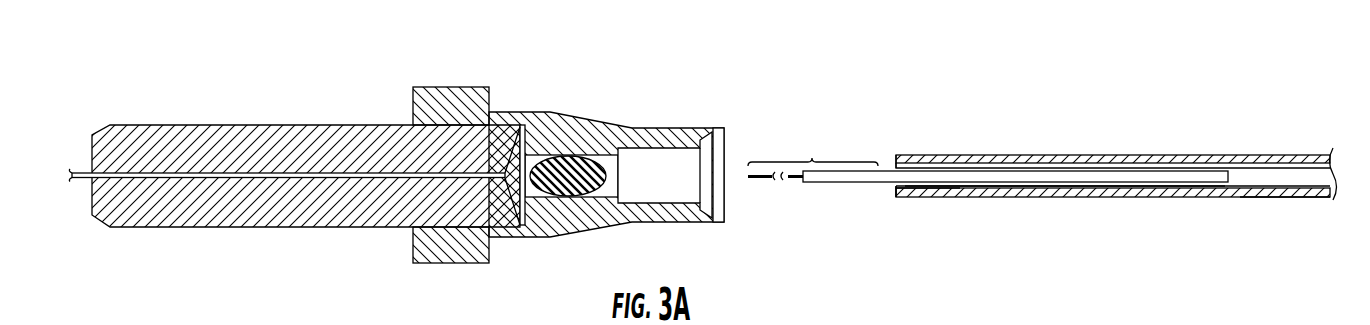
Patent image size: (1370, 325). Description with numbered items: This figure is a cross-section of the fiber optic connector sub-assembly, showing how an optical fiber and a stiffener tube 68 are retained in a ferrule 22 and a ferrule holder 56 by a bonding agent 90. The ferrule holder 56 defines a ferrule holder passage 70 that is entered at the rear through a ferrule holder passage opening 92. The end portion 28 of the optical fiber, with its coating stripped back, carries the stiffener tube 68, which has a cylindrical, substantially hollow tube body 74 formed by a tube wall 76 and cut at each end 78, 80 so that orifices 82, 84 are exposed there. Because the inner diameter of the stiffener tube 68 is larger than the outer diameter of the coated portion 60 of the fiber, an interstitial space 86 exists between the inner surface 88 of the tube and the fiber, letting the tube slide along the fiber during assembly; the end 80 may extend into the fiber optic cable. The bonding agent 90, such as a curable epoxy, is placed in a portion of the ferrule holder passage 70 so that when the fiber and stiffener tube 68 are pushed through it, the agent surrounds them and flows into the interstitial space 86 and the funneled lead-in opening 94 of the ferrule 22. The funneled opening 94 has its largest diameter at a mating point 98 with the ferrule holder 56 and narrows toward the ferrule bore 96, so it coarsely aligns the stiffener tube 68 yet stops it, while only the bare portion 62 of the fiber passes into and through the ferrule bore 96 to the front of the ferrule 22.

The ferrule 22 is at (203, 213).
The end portion 28 is at (813, 146).
The ferrule holder 56 is at (555, 113).
The coated portion 60 is at (827, 184).
The bare portion 62 is at (757, 180).
The stiffener tube 68 is at (990, 154).
The ferrule holder passage 70 is at (603, 158).
The tube body 74 is at (992, 198).
The tube wall 76 is at (1055, 195).
The end 78 is at (898, 199).
The end 80 is at (1294, 203).
The orifice 82 is at (896, 188).
The orifice 84 is at (1334, 175).
The interstitial space 86 is at (1105, 187).
The inner surface 88 is at (1140, 158).
The bonding agent 90 is at (562, 183).
The ferrule holder passage opening 92 is at (727, 150).
The funneled lead-in opening 94 is at (510, 182).
The ferrule bore 96 is at (148, 172).
The mating point 98 is at (523, 130).